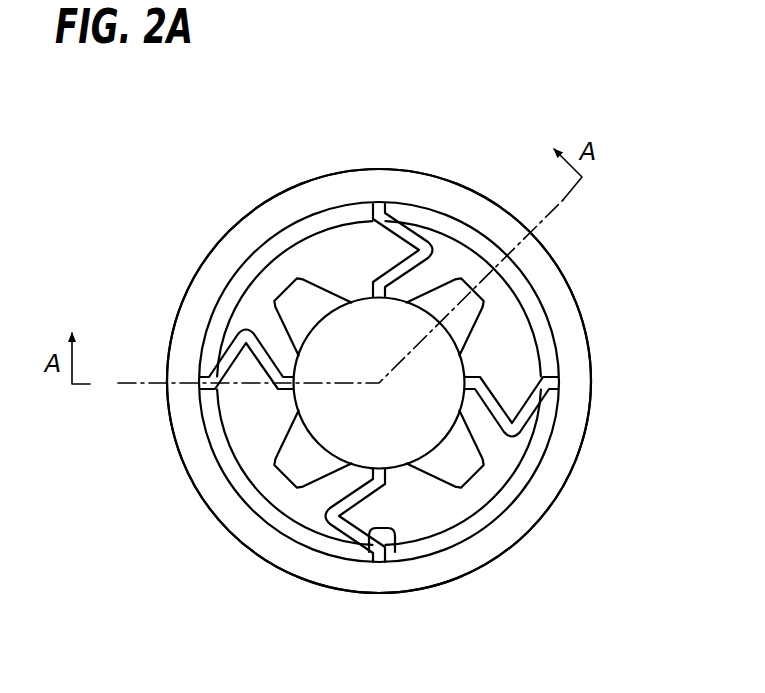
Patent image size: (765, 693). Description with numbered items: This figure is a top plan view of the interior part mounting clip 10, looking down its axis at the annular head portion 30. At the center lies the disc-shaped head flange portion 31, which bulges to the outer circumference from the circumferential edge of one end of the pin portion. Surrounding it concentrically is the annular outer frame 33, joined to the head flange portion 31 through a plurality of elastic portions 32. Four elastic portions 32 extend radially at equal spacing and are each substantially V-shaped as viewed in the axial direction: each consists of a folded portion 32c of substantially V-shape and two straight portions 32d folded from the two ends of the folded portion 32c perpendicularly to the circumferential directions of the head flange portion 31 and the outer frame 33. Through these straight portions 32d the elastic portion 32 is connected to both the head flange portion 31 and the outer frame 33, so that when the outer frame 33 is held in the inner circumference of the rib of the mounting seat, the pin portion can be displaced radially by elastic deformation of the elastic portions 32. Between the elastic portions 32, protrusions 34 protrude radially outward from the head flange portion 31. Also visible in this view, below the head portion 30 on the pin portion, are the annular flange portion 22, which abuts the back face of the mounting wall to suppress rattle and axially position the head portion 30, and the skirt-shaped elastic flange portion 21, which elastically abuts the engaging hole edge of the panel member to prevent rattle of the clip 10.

The clip 10 is at (249, 170).
The head portion 30 is at (614, 326).
The outer frame 33 is at (584, 428).
The elastic flange portion 21 is at (486, 488).
The annular flange portion 22 is at (488, 489).
The head flange portion 31 is at (467, 363).
The elastic portion 32 is at (412, 226).
The folded portion 32c is at (397, 560).
The straight portion 32d is at (351, 562).
The protrusion 34 is at (285, 287).